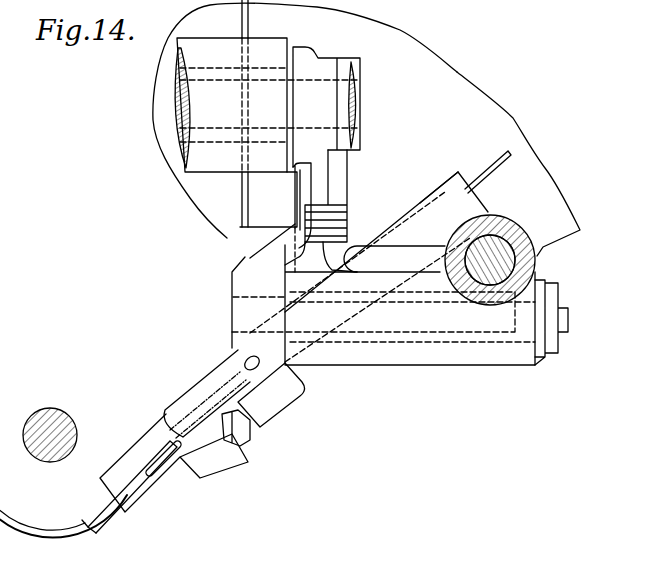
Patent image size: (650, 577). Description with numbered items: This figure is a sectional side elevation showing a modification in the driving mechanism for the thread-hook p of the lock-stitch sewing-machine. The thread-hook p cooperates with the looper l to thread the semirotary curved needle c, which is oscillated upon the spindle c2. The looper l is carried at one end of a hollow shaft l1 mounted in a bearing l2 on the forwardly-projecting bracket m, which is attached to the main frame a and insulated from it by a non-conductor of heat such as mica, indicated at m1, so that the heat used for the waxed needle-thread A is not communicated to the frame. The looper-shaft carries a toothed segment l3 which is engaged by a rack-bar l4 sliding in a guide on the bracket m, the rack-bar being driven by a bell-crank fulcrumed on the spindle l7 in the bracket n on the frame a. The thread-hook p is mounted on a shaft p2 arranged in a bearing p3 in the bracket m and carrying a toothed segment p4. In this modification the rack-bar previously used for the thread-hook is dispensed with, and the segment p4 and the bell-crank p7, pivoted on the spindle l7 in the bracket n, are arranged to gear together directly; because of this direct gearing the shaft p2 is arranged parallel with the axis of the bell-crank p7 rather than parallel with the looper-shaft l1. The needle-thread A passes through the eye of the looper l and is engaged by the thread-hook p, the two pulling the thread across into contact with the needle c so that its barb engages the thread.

The main frame a is at (160, 116).
The bracket m is at (513, 118).
The non-conductor of heat m1 is at (241, 25).
The bracket n is at (213, 167).
The spindle l7 is at (315, 85).
The bell-crank p7 is at (328, 184).
The toothed segment p4 is at (253, 264).
The bearing l2 is at (326, 376).
The shaft p2 is at (409, 344).
The bearing p3 is at (482, 362).
The toothed segment l3 is at (454, 197).
The rack-bar l4 is at (510, 267).
The needle-thread A is at (486, 173).
The shaft l1 is at (287, 408).
The looper l is at (143, 478).
The thread-hook p is at (107, 485).
The spindle c2 is at (76, 420).
The needle c is at (48, 533).